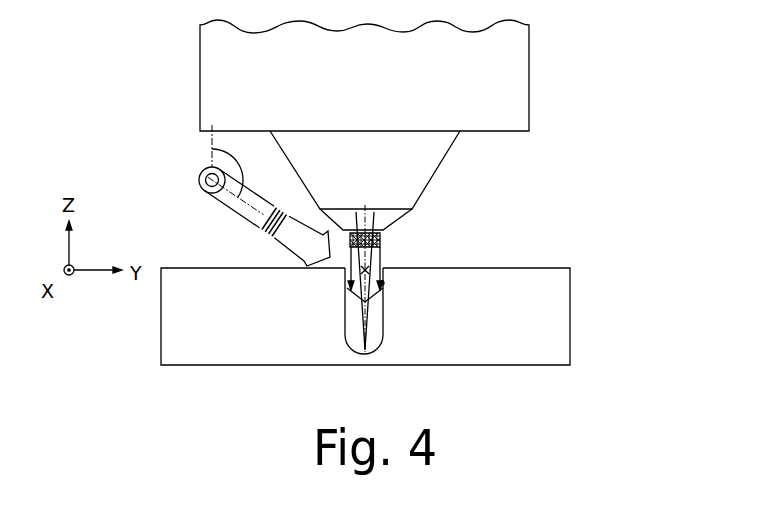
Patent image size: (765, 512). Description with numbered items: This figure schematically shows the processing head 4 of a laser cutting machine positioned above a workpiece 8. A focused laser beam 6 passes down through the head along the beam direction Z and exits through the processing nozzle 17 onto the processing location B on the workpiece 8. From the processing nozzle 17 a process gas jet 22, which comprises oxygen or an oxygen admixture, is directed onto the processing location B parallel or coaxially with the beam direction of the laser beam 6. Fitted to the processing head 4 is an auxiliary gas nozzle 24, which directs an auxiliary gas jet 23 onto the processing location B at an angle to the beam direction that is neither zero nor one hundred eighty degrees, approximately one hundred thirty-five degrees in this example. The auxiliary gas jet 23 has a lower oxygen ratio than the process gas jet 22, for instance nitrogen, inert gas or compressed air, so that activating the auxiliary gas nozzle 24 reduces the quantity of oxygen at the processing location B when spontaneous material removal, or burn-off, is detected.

The processing head 4 is at (217, 80).
The processing nozzle 17 is at (387, 218).
The laser beam 6 is at (333, 220).
The process gas jet 22 is at (385, 283).
The processing location B is at (368, 268).
The workpiece 8 is at (536, 320).
The auxiliary gas nozzle 24 is at (235, 201).
The auxiliary gas jet 23 is at (300, 243).